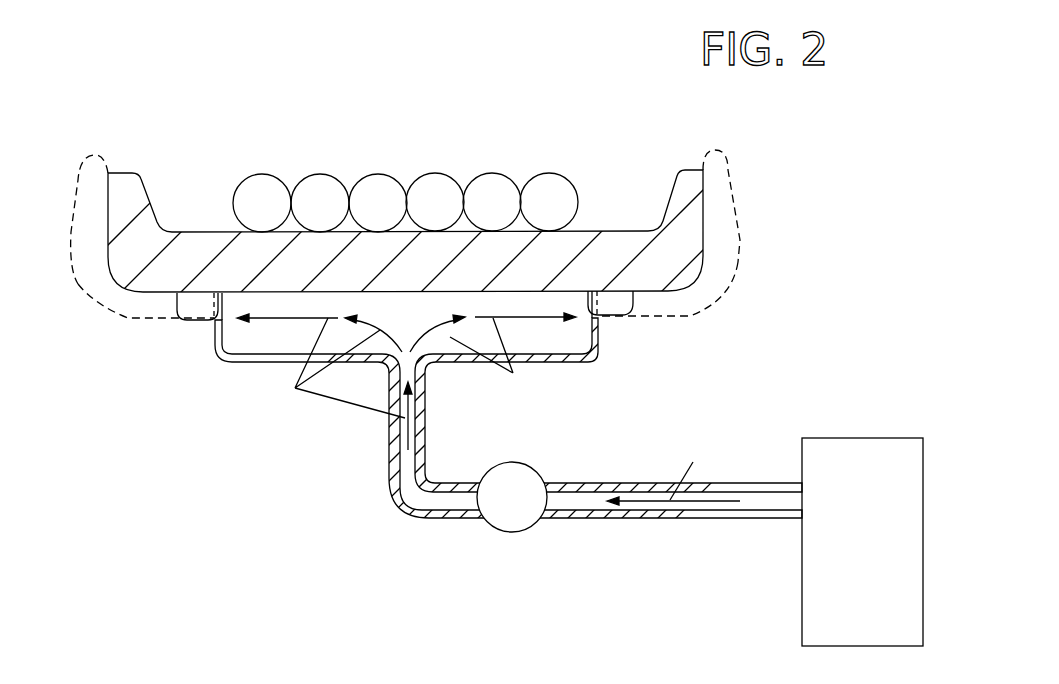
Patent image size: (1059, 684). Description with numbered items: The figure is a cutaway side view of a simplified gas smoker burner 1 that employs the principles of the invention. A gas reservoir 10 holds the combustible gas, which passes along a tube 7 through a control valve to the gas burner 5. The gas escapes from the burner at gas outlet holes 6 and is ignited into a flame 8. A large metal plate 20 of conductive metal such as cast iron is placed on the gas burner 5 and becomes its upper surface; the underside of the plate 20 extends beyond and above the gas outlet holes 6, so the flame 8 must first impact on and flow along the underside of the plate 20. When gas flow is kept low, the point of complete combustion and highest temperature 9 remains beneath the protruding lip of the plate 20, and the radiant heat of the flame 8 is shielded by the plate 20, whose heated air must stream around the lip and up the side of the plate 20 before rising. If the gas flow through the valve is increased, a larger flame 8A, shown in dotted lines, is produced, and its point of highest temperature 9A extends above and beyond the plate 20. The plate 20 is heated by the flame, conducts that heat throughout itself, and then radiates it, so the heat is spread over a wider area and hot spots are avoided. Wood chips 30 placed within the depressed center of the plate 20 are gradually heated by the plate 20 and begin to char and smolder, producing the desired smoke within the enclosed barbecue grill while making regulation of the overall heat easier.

The gas smoker burner 1 is at (224, 451).
The gas burner 5 is at (588, 355).
The gas outlet holes 6 is at (212, 323).
The tube 7 is at (697, 520).
The flame 8 is at (198, 307).
The larger flame 8A is at (78, 284).
The point of complete combustion (highest temperature) 9 is at (178, 307).
The point of highest temperature 9A is at (96, 152).
The gas reservoir 10 is at (893, 438).
The metal plate 20 is at (150, 178).
The wood chips 30 is at (440, 174).